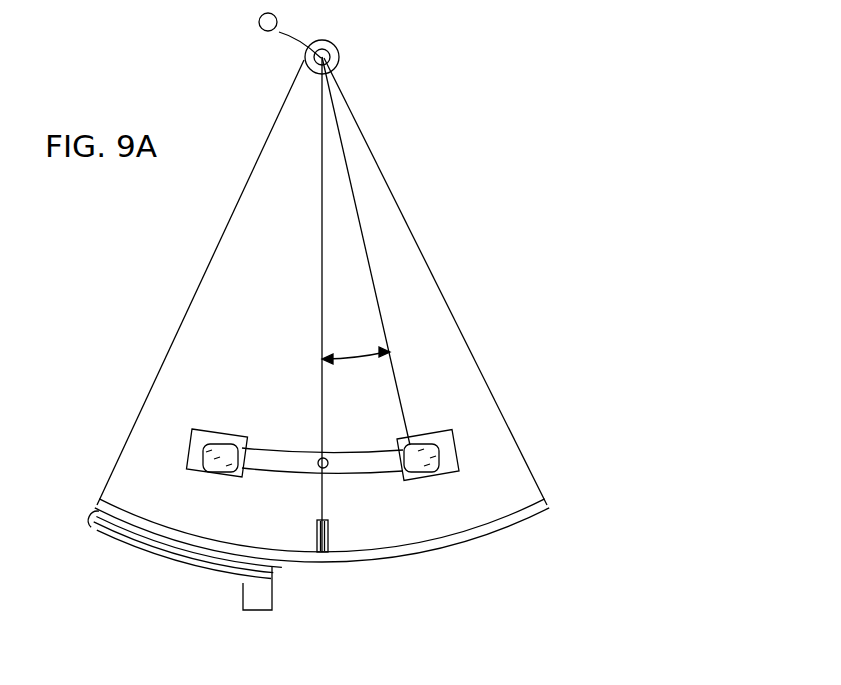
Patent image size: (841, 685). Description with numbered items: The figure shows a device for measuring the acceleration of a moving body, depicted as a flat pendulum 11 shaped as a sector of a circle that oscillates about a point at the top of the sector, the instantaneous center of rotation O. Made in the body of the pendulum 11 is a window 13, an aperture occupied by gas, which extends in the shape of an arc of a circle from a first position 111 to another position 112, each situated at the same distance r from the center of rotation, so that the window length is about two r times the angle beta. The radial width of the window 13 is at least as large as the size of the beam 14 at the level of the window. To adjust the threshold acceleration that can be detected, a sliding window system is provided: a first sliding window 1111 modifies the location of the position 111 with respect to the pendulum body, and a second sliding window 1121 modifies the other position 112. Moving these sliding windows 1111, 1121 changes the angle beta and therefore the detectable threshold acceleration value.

The pendulum 11 is at (432, 253).
The first position 111 is at (404, 457).
The first sliding window 1111 is at (448, 470).
The other position 112 is at (212, 430).
The second sliding window 1121 is at (210, 472).
The window 13 is at (381, 474).
The beam 14 is at (330, 465).